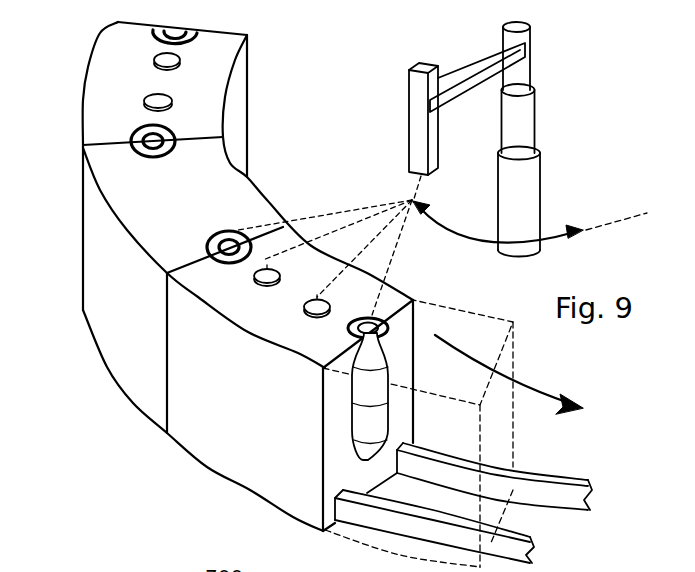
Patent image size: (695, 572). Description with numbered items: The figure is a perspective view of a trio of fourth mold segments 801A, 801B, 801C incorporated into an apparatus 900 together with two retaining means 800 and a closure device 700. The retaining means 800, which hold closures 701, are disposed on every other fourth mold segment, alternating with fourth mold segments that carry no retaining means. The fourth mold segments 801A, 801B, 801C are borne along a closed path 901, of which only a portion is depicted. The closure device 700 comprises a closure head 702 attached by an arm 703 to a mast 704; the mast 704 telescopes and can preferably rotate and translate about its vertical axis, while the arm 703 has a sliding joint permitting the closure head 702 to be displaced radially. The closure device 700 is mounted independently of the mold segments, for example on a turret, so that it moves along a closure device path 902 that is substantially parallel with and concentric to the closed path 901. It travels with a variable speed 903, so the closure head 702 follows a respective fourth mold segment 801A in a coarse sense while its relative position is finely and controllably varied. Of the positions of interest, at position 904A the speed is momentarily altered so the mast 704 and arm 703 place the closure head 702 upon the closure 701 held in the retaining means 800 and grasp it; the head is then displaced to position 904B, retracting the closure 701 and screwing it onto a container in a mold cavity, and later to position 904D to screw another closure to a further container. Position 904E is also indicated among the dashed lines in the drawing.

The closure device 700 is at (520, 139).
The closure 701 is at (223, 317).
The closure head 702 is at (422, 63).
The arm 703 is at (463, 85).
The mast 704 is at (522, 187).
The retaining means 800 is at (152, 60).
The fourth mold segment 801A is at (262, 483).
The fourth mold segment 801B is at (118, 357).
The fourth mold segment 801C is at (100, 96).
The apparatus 900 is at (530, 557).
The closed path 901 is at (545, 395).
The closure device path 902 is at (630, 228).
The variable speed 903 is at (445, 226).
The position 904A is at (397, 208).
The position 904B is at (397, 262).
The position 904D is at (327, 215).
The sensing beam E 904E is at (368, 217).